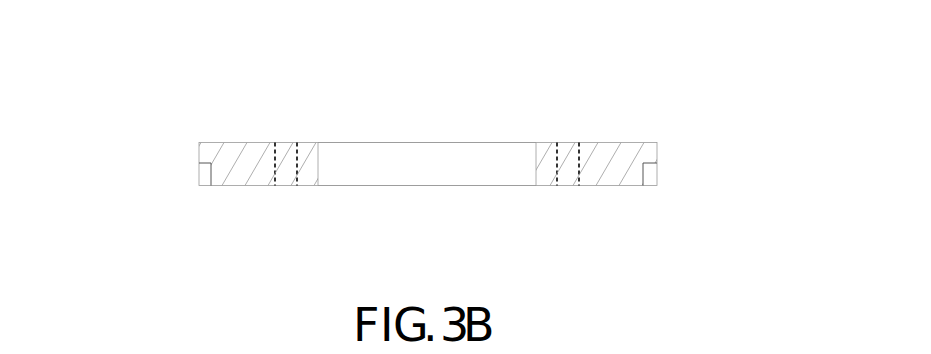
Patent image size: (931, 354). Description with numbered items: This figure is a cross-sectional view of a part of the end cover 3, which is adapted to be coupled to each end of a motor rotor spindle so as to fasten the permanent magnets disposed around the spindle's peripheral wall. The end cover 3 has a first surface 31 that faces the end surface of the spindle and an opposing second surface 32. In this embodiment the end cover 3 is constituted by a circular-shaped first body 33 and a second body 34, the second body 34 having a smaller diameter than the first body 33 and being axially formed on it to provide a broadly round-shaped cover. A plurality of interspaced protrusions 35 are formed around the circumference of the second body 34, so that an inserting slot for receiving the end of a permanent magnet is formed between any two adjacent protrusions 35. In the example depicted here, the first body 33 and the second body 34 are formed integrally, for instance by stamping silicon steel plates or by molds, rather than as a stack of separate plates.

The end cover 3 is at (508, 74).
The first surface 31 is at (623, 186).
The second surface 32 is at (615, 145).
The first body 33 is at (364, 142).
The second body 34 is at (370, 184).
The protrusions 35 is at (205, 173).